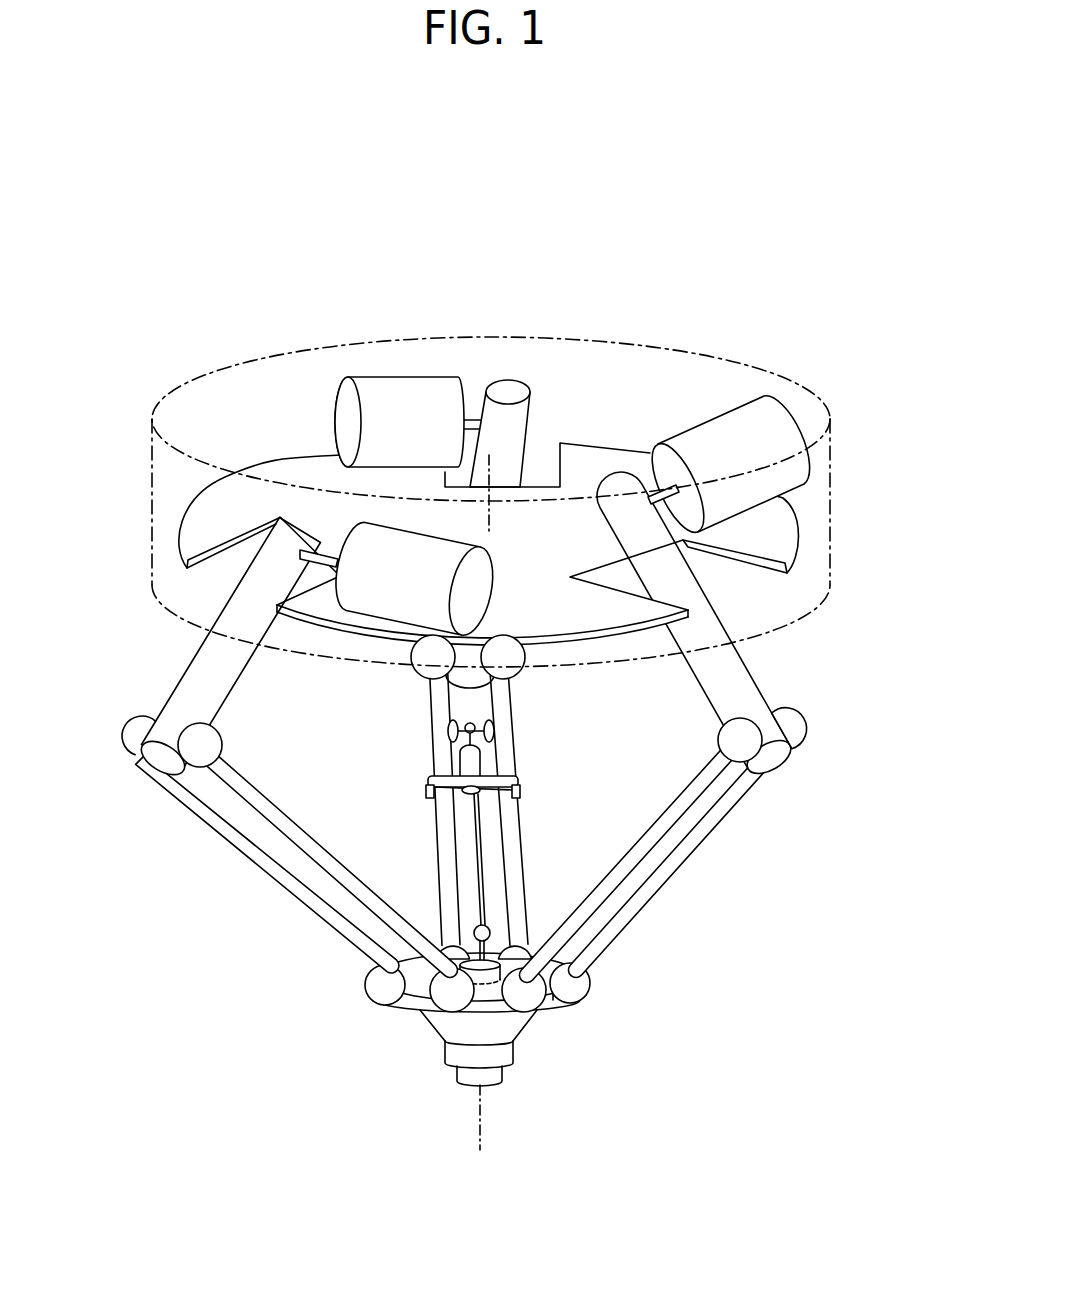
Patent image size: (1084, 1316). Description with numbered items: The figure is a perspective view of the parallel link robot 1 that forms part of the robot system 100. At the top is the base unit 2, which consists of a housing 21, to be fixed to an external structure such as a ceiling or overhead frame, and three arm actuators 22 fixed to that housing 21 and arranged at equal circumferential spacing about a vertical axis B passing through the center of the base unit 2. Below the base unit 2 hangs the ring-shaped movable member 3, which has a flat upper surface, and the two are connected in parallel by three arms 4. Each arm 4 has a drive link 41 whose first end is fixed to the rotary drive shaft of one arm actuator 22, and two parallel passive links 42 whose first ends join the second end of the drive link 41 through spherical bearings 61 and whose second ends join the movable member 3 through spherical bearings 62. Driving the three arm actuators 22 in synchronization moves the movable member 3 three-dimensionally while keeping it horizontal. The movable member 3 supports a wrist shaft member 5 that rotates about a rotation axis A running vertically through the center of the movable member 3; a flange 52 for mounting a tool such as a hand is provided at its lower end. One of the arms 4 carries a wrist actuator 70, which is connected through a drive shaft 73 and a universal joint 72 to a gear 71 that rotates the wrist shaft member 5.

The robot system 100 is at (824, 196).
The parallel link robot 1 is at (108, 394).
The base unit 2 is at (762, 530).
The housing 21 is at (832, 553).
The arm actuator 22 is at (400, 388).
The drive link 41 is at (510, 390).
The passive link 42 is at (437, 710).
The arm 4 is at (549, 688).
The spherical bearing 61 is at (512, 650).
The spherical bearing 62 is at (378, 988).
The wrist shaft member 5 is at (512, 953).
The flange 52 is at (470, 1084).
The movable member 3 is at (536, 1092).
The wrist actuator 70 is at (463, 757).
The gear 71 is at (410, 972).
The universal joint 72 is at (475, 925).
The drive shaft 73 is at (480, 822).
The rotation axis A is at (480, 1138).
The vertical axis B is at (497, 473).